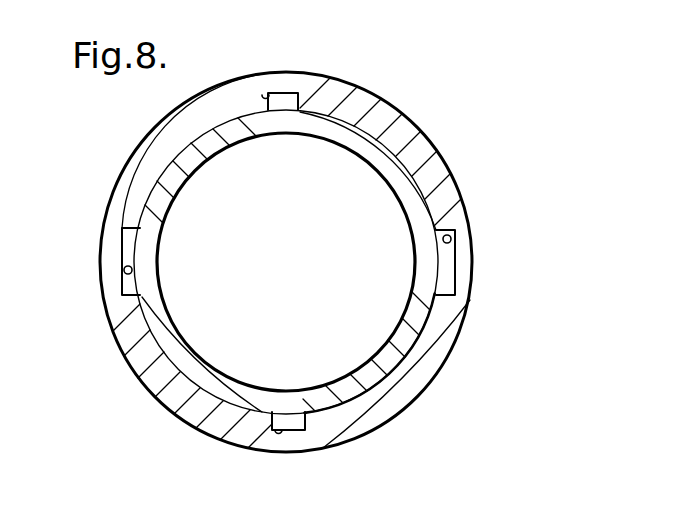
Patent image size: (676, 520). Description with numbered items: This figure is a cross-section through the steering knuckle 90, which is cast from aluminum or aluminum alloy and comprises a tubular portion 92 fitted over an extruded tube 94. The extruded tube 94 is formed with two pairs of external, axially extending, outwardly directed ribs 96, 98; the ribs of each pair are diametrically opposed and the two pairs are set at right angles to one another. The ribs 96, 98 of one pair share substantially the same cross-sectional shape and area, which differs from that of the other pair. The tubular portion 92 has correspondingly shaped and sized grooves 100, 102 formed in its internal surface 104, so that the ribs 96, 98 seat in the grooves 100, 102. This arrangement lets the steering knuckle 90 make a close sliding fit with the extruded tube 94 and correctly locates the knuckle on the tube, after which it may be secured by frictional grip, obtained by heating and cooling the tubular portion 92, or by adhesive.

The steering knuckle 90 is at (440, 106).
The tubular portion 92 is at (440, 176).
The extruded tube 94 is at (171, 205).
The ribs 96 is at (300, 92).
The ribs 98 is at (122, 243).
The grooves 100 is at (261, 88).
The grooves 102 is at (120, 281).
The internal surface 104 is at (176, 357).